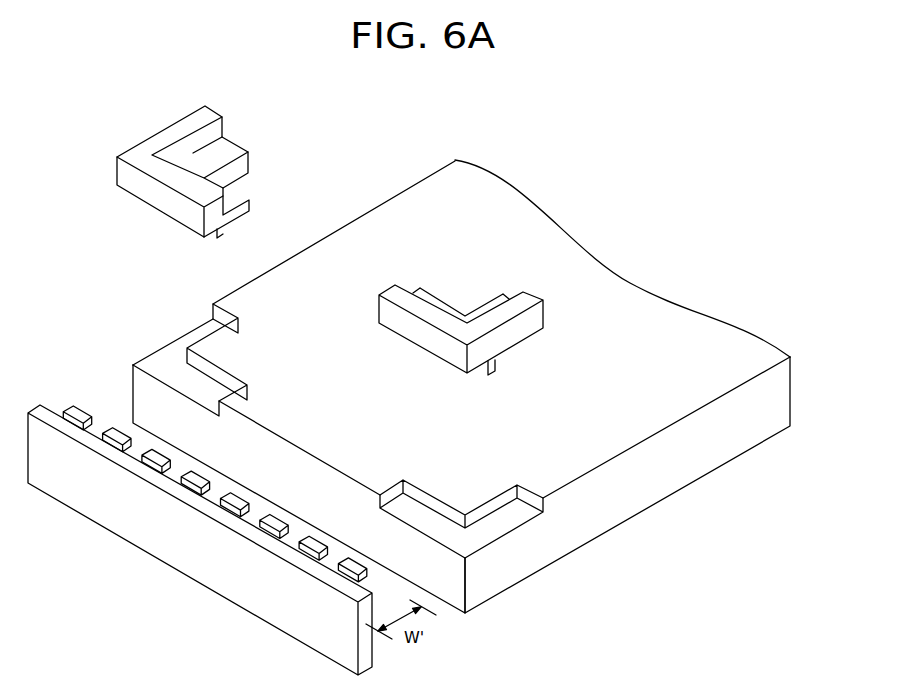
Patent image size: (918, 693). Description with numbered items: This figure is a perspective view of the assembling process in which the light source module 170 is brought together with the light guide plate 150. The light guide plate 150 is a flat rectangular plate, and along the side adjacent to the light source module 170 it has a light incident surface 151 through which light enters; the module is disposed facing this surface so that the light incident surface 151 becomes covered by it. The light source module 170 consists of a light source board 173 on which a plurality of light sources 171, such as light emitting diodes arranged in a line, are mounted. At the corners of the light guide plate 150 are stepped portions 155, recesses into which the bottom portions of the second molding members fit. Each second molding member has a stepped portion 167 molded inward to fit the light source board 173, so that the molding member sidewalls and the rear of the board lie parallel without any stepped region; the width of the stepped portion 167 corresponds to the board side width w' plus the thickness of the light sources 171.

The light guide plate 150 is at (648, 488).
The light incident surface 151 is at (451, 600).
The stepped portion 155 is at (496, 527).
The stepped portion 167 is at (216, 233).
The light source module 170 is at (200, 540).
The light sources 171 is at (268, 527).
The light source board 173 is at (273, 596).